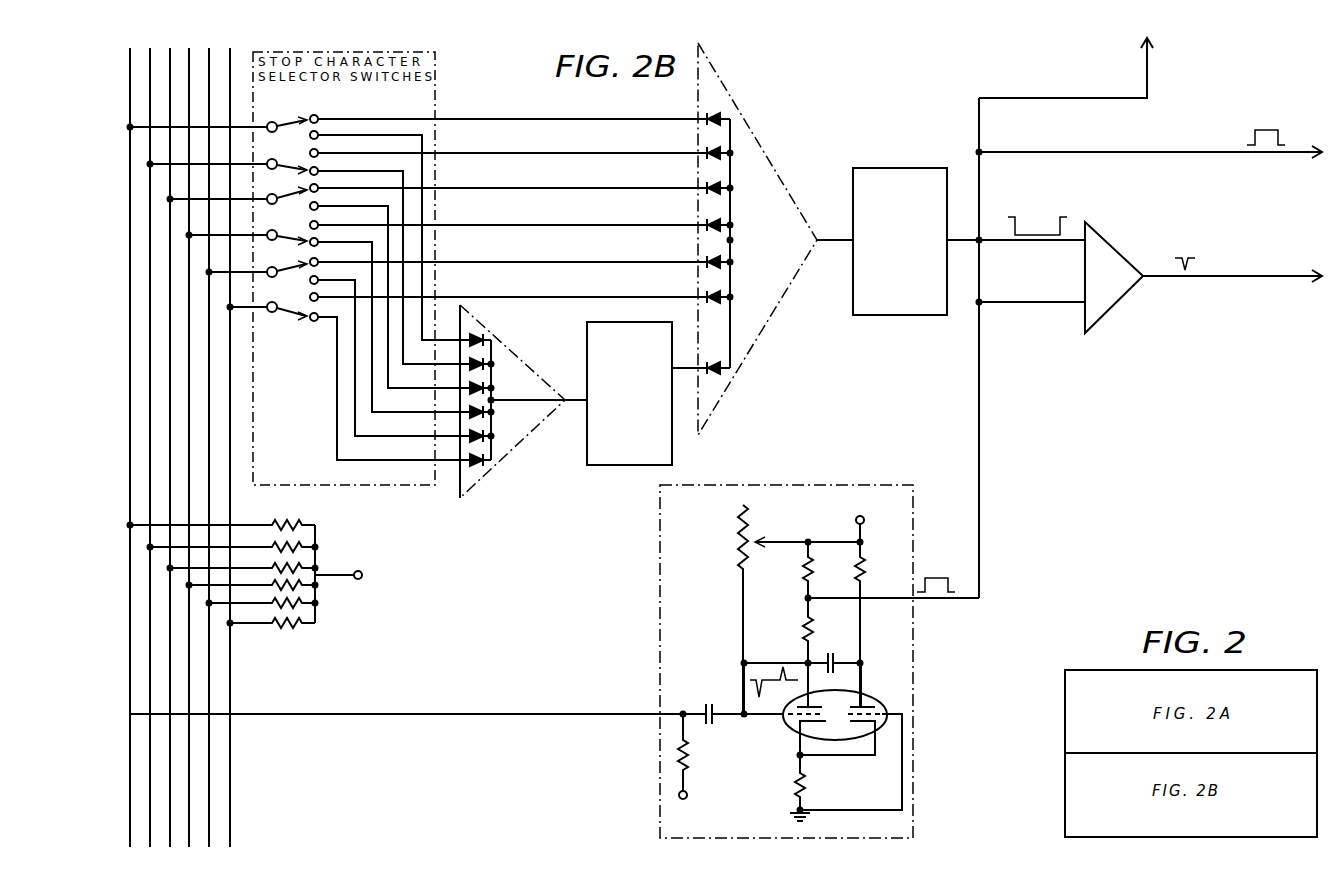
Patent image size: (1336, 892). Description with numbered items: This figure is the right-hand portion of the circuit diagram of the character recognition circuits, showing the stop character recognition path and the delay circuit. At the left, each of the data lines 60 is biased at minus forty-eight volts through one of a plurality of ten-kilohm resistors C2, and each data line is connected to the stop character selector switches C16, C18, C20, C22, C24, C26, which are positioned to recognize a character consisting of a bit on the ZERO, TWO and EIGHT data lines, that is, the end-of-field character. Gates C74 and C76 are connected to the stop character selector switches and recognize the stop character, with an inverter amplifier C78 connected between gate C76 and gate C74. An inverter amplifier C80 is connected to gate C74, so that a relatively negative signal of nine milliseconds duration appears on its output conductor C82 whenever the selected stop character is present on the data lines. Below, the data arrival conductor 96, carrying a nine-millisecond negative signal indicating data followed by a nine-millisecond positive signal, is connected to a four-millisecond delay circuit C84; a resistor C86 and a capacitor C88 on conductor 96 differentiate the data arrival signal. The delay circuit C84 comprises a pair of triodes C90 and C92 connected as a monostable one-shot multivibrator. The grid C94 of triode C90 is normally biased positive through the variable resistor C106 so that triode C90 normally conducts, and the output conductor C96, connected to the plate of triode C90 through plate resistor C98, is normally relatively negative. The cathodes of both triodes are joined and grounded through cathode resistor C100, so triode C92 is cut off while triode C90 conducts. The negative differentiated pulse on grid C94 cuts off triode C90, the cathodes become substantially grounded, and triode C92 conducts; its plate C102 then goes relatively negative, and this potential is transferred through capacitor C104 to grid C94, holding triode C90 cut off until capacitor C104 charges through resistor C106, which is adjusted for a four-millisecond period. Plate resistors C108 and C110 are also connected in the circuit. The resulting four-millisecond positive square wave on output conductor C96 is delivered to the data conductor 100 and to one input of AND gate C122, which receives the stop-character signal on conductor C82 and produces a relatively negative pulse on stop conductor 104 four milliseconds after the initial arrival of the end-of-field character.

The stop character selector switch C16 is at (306, 118).
The stop character selector switch C18 is at (310, 170).
The stop character selector switch C20 is at (305, 199).
The stop character selector switch C22 is at (306, 249).
The stop character selector switch C24 is at (308, 269).
The stop character selector switch C26 is at (308, 317).
The resistors C2 is at (306, 627).
The data lines 60 is at (240, 780).
The data arrival conductor 96 is at (400, 716).
The gate C74 is at (752, 135).
The gate C76 is at (525, 355).
The inverter amplifier C78 is at (618, 468).
The inverter amplifier C80 is at (908, 168).
The output conductor C82 is at (1000, 243).
The output conductor C96 is at (1147, 66).
The AND gate C122 is at (1123, 252).
The data conductor 100 is at (1252, 155).
The stop conductor 104 is at (1213, 273).
The 4 millisecond delay circuit C84 is at (773, 483).
The variable resistor C106 is at (740, 556).
The plate resistor C108 is at (806, 578).
The plate resistor C110 is at (858, 570).
The plate resistor C98 is at (805, 625).
The capacitor C104 is at (838, 648).
The capacitor C88 is at (710, 700).
The resistor C86 is at (690, 765).
The triode C92 is at (890, 686).
The triode C90 is at (792, 722).
The plate C102 is at (862, 705).
The grid C94 is at (826, 721).
The cathode resistor C100 is at (795, 795).